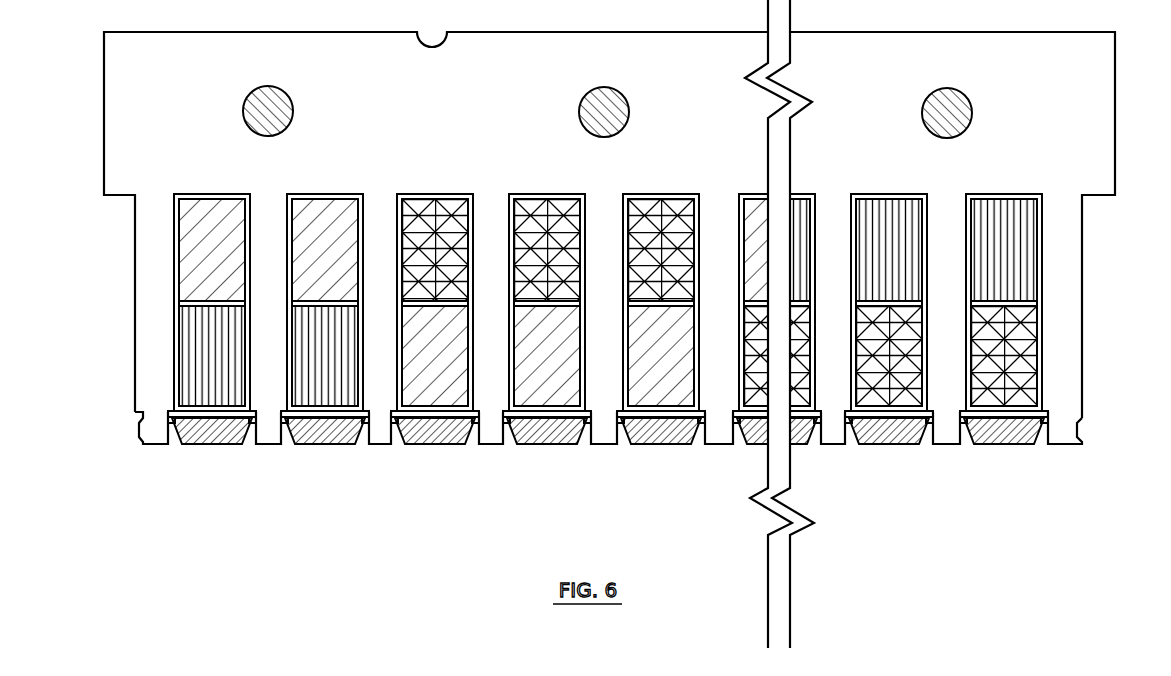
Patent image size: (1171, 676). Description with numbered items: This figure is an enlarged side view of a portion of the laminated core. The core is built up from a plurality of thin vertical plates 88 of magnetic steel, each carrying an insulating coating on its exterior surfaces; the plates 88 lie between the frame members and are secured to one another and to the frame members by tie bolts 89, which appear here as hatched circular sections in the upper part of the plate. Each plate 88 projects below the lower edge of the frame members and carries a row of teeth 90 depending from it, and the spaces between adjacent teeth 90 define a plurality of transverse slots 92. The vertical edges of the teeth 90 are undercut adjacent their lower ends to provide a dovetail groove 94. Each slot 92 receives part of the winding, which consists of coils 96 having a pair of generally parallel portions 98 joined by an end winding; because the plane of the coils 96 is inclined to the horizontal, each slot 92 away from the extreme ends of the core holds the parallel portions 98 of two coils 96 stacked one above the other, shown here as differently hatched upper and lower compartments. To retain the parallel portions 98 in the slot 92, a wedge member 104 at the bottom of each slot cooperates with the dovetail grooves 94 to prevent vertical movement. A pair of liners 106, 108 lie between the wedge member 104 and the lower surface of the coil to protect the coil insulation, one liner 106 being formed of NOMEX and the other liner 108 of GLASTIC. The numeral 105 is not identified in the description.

The thin vertical plate 88 is at (613, 265).
The tie bolt 89 is at (291, 106).
The tooth 90 is at (1073, 300).
The transverse slot 92 is at (988, 198).
The dovetail groove 94 is at (1083, 428).
The coil 96 is at (205, 218).
The parallel portion 98 is at (458, 202).
The wedge member 104 is at (568, 443).
The laminated core section 105 is at (193, 374).
The liner 106 is at (193, 405).
The liner 108 is at (223, 417).